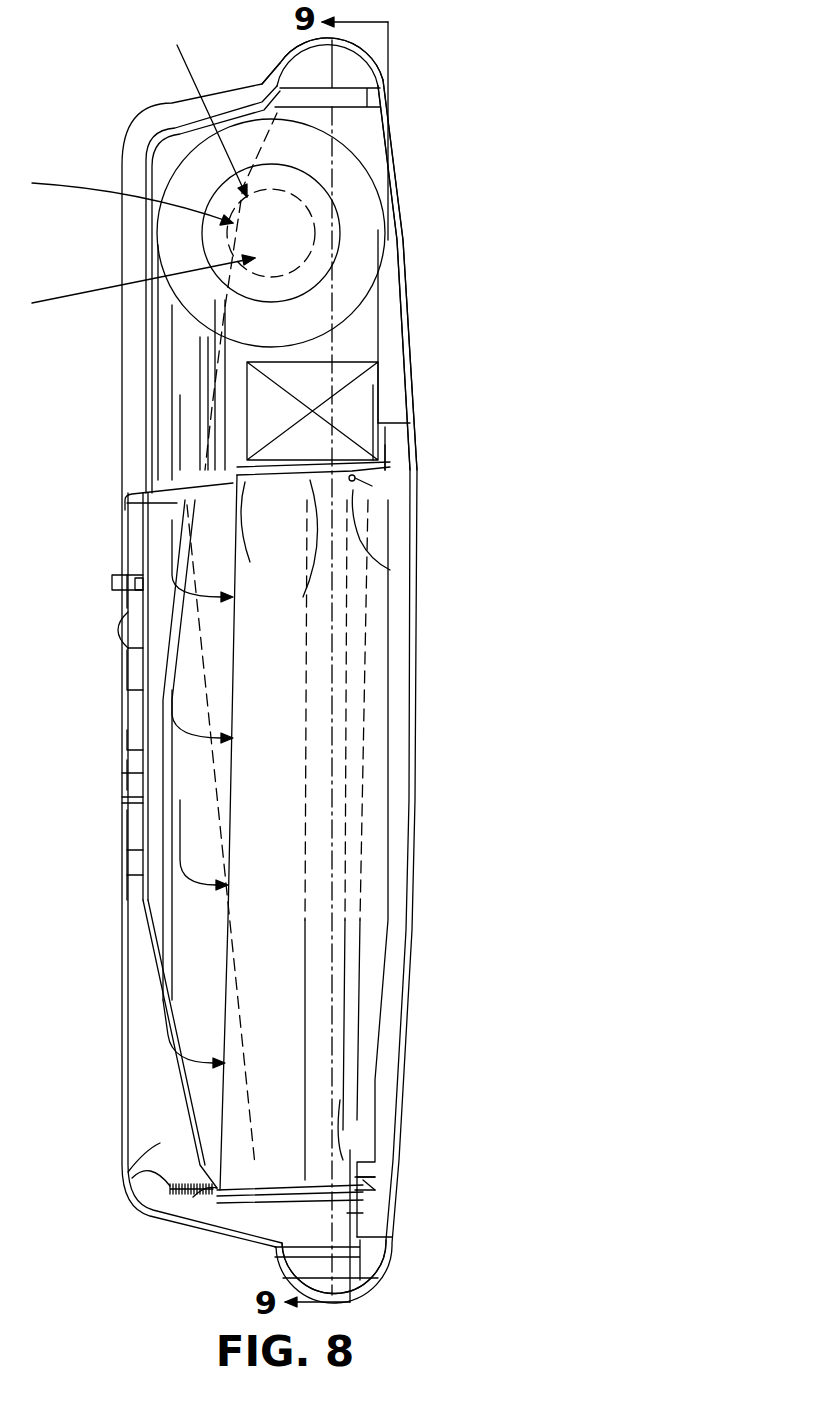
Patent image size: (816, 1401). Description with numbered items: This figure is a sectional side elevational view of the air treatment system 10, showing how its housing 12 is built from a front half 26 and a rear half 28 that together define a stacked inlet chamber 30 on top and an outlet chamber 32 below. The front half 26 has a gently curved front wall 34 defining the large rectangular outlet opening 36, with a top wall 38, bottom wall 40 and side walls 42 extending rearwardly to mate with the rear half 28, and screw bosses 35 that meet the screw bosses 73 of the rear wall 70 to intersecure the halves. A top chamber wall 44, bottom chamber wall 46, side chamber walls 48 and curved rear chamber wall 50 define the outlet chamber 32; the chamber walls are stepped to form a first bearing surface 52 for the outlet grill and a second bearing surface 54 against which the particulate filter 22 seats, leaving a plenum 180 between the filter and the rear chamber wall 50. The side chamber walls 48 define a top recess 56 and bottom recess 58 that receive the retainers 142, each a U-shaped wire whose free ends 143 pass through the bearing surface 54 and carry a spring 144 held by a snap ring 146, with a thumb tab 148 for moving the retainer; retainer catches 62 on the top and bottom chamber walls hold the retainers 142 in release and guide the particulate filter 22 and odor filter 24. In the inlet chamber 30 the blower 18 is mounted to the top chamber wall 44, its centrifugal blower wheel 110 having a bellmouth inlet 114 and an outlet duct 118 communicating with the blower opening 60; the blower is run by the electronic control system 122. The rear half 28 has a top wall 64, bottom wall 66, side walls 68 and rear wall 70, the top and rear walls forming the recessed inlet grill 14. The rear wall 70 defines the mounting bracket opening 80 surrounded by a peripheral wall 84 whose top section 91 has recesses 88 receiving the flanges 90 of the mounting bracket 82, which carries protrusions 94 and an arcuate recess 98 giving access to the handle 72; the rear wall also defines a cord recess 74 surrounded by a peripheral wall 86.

The air treatment system 10 is at (494, 140).
The housing 12 is at (408, 233).
The inlet grill 14 is at (147, 278).
The blower 18 is at (365, 297).
The particulate filter 22 is at (310, 765).
The odor filter 24 is at (353, 865).
The front half 26 is at (413, 412).
The rear half 28 is at (122, 440).
The inlet chamber 30 is at (367, 150).
The outlet chamber 32 is at (365, 625).
The front wall 34 is at (407, 358).
The screw bosses 35 is at (382, 74).
The outlet opening 36 is at (408, 553).
The top wall 38 is at (353, 42).
The bottom wall 40 is at (372, 1283).
The side walls 42 is at (388, 283).
The top chamber wall 44 is at (377, 483).
The bottom chamber wall 46 is at (363, 1180).
The side chamber walls 48 is at (365, 737).
The rear chamber wall 50 is at (122, 832).
The first bearing surface 52 is at (390, 448).
The second bearing surface 54 is at (247, 482).
The top recess 56 is at (390, 570).
The bottom recess 58 is at (303, 1152).
The blower opening 60 is at (168, 504).
The retainer catches 62 is at (373, 490).
The top wall 64 is at (290, 64).
The bottom wall 66 is at (274, 1258).
The side walls 68 is at (122, 1170).
The rear wall 70 is at (122, 935).
The handle 72 is at (112, 575).
The screw bosses 73 is at (346, 88).
The cord recess 74 is at (122, 875).
The mounting bracket opening 80 is at (122, 773).
The mounting bracket 82 is at (122, 690).
The peripheral wall 84 is at (122, 800).
The peripheral wall 86 is at (122, 850).
The recesses 88 is at (118, 585).
The mounting bracket flanges 90 is at (138, 583).
The top section 91 is at (130, 580).
The protrusions 94 is at (120, 634).
The arcuate recess 98 is at (124, 648).
The centrifugal blower wheel 110 is at (377, 190).
The bellmouth inlet 114 is at (271, 233).
The outlet duct 118 is at (179, 155).
The electronic control system 122 is at (382, 387).
The retainers 142 is at (303, 597).
The free ends 143 is at (132, 1178).
The spring 144 is at (250, 562).
The snap ring 146 is at (170, 1188).
The thumb tab 148 is at (380, 484).
The plenum 180 is at (188, 840).